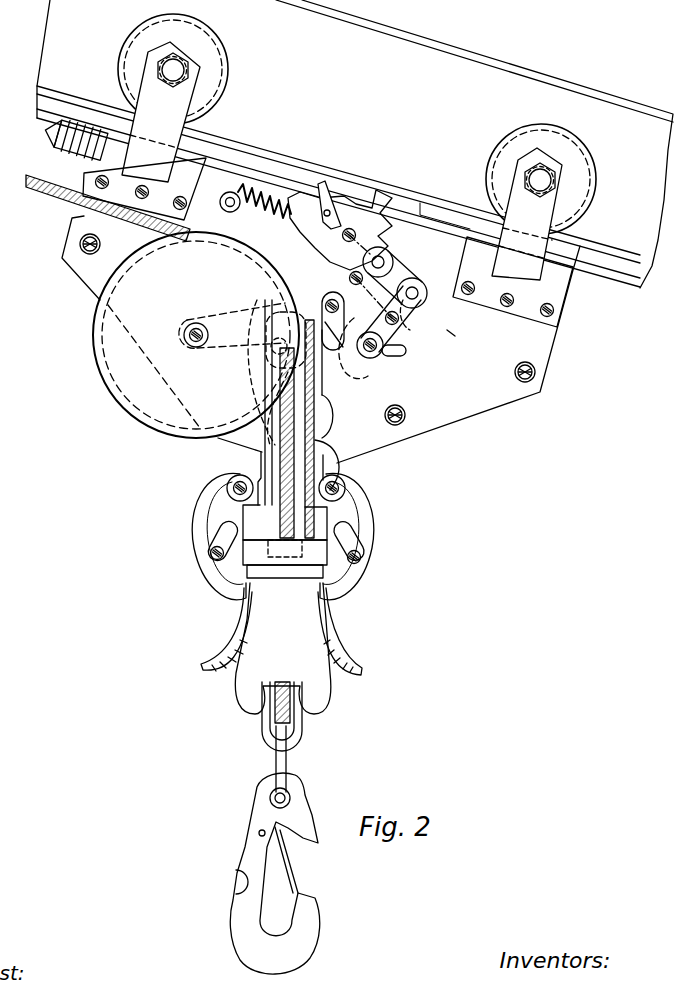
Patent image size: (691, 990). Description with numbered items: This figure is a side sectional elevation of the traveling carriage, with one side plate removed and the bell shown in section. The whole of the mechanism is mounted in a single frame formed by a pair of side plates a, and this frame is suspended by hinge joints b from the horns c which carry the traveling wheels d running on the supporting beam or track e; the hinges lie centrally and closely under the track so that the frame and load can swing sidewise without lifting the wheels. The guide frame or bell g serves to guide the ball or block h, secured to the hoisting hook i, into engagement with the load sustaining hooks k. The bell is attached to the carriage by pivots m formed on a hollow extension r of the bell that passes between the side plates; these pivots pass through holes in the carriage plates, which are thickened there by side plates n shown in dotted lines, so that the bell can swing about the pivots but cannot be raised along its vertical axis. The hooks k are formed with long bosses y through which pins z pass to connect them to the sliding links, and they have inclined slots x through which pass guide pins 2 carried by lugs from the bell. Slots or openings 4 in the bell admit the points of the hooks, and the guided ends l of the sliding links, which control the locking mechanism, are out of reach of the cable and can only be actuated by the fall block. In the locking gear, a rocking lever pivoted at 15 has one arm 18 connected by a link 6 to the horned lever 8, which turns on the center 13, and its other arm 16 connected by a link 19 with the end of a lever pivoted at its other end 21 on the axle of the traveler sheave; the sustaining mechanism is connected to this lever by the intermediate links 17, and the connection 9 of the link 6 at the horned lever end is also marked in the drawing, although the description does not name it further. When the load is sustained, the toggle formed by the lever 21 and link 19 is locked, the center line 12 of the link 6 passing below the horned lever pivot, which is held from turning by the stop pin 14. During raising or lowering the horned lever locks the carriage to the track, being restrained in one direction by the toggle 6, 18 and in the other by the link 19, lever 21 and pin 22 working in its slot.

The supporting beam or track e is at (355, 144).
The traveling wheels d is at (210, 77).
The horns c is at (342, 161).
The hinge joints b is at (140, 158).
The side plates a is at (478, 394).
The lever pivoted on the axle of the traveler sheave 21 is at (219, 340).
The intermediate links 17 is at (282, 325).
The pivots m is at (272, 349).
The side plates n is at (270, 374).
The center of the horned lever 13 is at (348, 240).
The horned lever 8 is at (352, 222).
The pivot 9 is at (382, 258).
The link 6 is at (394, 272).
The stop pin 14 is at (357, 285).
The arm of the rocking lever 18 is at (412, 313).
The pivot of the rocking lever 15 is at (396, 323).
The arm of the rocking lever 16 is at (404, 354).
The link 19 is at (352, 364).
The pin 22 is at (326, 300).
The center line of the link 12 is at (456, 336).
The hollow extension of the bell r is at (317, 420).
The long bosses y is at (234, 485).
The pins z is at (243, 480).
The load sustaining hooks k is at (213, 588).
The inclined slots x is at (226, 533).
The guide pins 2 is at (211, 553).
The guided ends of the sliding links l is at (283, 609).
The slots or openings in the bell 4 is at (246, 600).
The guide frame or bell g is at (346, 655).
The ball or block h is at (324, 686).
The hoisting hook i is at (306, 916).